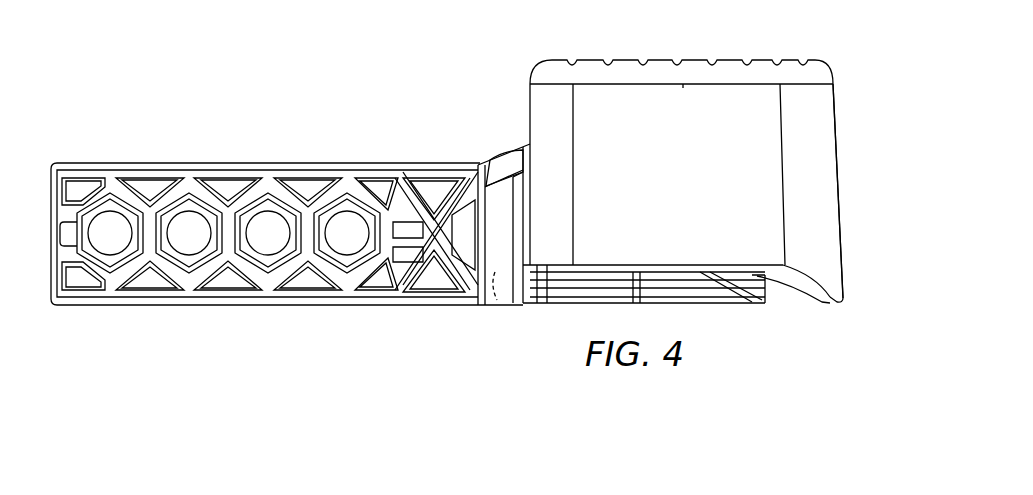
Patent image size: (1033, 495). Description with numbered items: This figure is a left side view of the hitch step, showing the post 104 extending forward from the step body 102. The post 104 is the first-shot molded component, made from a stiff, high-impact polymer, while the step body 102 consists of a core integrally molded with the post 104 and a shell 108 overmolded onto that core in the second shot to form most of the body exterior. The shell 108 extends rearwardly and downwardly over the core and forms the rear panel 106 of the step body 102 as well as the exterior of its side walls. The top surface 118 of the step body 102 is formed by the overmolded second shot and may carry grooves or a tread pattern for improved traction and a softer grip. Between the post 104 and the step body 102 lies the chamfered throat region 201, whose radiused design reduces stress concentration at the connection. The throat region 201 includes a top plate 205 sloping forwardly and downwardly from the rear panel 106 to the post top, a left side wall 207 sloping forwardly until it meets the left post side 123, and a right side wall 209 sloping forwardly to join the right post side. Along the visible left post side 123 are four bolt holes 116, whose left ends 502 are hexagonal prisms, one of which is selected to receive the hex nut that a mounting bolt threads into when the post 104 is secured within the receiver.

The step body 102 is at (815, 140).
The post 104 is at (380, 141).
The rear panel 106 is at (840, 190).
The shell 108 is at (697, 168).
The bolt holes 116 is at (97, 230).
The top surface 118 is at (694, 60).
The left post side 123 is at (112, 172).
The throat region 201 is at (486, 312).
The top plate 205 is at (505, 163).
The left side wall 207 is at (505, 210).
The right side wall 209 is at (497, 298).
The left ends of the bolt holes 502 is at (253, 213).